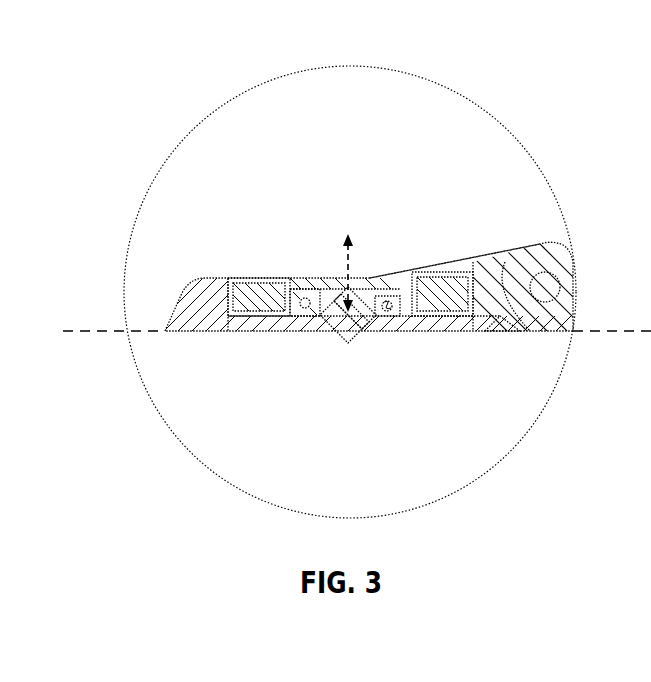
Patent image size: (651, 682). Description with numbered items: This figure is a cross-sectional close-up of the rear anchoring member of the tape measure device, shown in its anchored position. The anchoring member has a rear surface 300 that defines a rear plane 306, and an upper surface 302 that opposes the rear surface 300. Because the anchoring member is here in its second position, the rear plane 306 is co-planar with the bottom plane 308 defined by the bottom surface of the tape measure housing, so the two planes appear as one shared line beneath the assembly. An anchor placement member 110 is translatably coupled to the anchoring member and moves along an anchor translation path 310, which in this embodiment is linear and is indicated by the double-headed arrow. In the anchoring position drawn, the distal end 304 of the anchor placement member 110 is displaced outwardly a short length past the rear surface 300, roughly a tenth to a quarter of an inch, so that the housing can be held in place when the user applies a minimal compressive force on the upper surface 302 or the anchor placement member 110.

The anchor placement member 110 is at (358, 320).
The rear surface 300 is at (220, 340).
The upper surface 302 is at (440, 262).
The distal end 304 is at (346, 353).
The rear plane 306 is at (92, 333).
The bottom plane 308 is at (597, 334).
The anchor translation path 310 is at (345, 270).